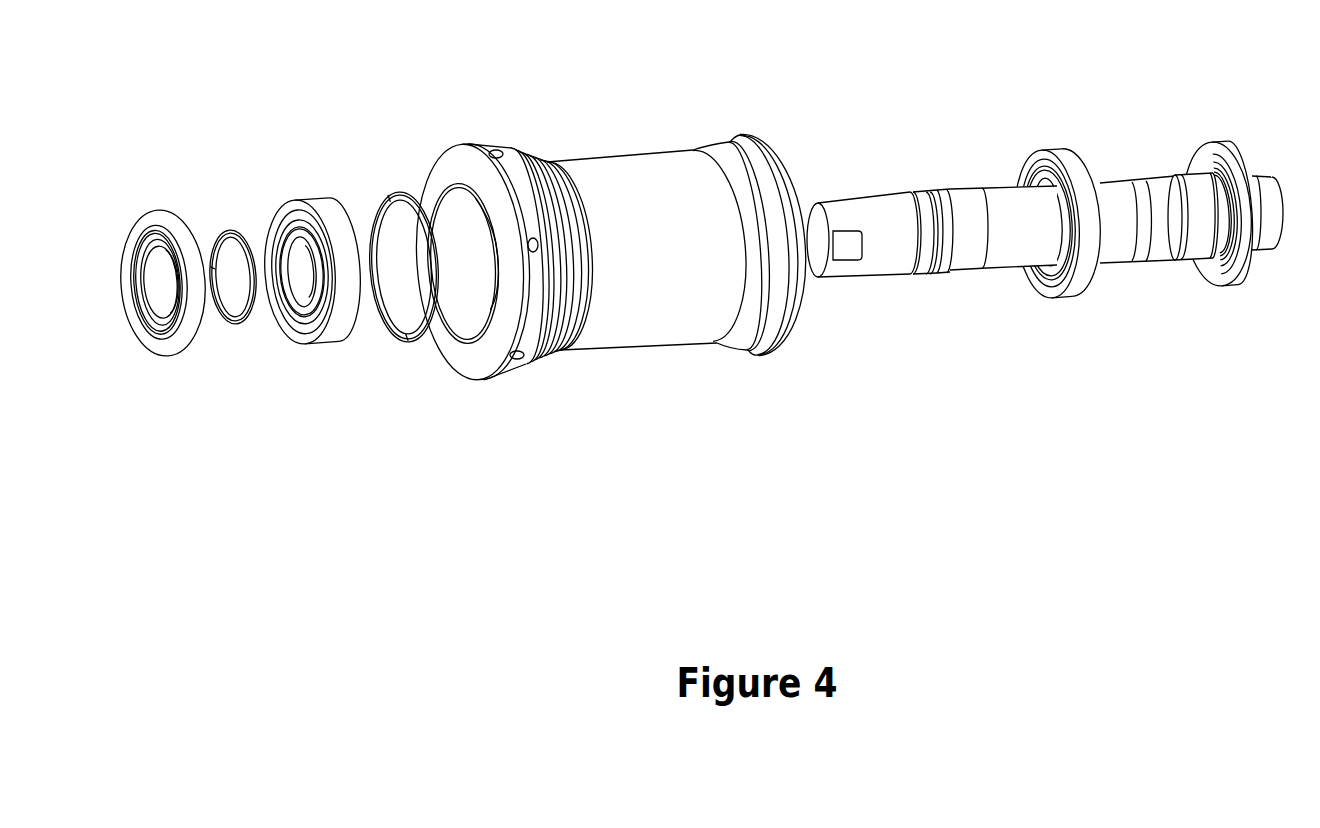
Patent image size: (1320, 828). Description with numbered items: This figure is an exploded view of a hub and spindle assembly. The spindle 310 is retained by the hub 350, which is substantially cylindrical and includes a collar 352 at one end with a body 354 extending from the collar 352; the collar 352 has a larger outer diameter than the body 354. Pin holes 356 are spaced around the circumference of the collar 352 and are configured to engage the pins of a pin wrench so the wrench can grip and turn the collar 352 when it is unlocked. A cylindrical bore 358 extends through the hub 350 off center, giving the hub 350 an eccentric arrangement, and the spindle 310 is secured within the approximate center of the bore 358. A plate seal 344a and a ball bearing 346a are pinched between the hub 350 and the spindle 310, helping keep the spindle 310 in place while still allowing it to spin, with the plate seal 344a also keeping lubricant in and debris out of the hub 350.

The spindle 310 is at (1130, 192).
The plate seal 344a is at (160, 218).
The ball bearing 346a is at (322, 205).
The hub 350 is at (568, 110).
The collar 352 is at (447, 170).
The body 354 is at (655, 172).
The pin holes 356 is at (495, 138).
The cylindrical bore 358 is at (486, 257).